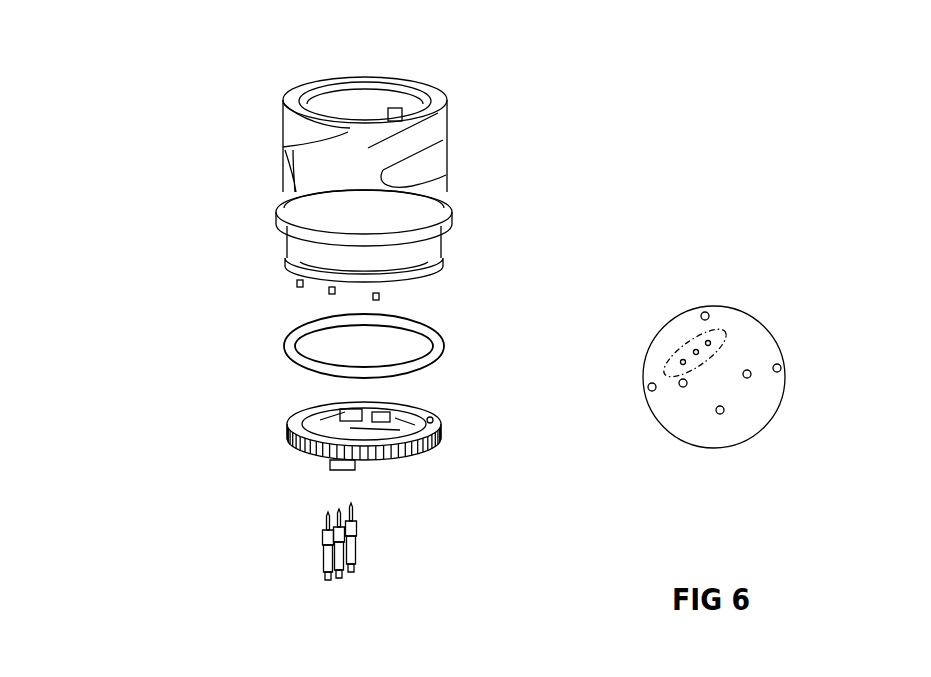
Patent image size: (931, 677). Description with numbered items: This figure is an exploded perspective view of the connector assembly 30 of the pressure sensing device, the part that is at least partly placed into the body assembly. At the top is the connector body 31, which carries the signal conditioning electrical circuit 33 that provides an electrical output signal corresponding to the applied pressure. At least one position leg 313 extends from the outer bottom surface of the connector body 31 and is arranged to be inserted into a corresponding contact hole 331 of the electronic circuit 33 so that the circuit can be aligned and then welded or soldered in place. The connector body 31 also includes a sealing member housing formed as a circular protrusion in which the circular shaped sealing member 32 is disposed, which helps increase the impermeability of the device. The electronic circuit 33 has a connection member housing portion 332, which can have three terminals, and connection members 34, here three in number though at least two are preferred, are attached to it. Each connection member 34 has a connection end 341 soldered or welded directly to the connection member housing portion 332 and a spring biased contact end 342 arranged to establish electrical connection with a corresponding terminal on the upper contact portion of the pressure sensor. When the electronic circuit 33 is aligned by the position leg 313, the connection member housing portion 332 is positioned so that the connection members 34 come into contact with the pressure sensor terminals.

The connector assembly 30 is at (158, 183).
The connector body 31 is at (418, 140).
The position leg 313 is at (303, 280).
The sealing member 32 is at (442, 358).
The signal conditioning electrical circuit 33 is at (632, 388).
The contact hole 331 is at (718, 413).
The connection member housing portion 332 is at (676, 350).
The connection member 34 is at (323, 560).
The connection end 341 is at (357, 513).
The spring biased contact end 342 is at (355, 572).